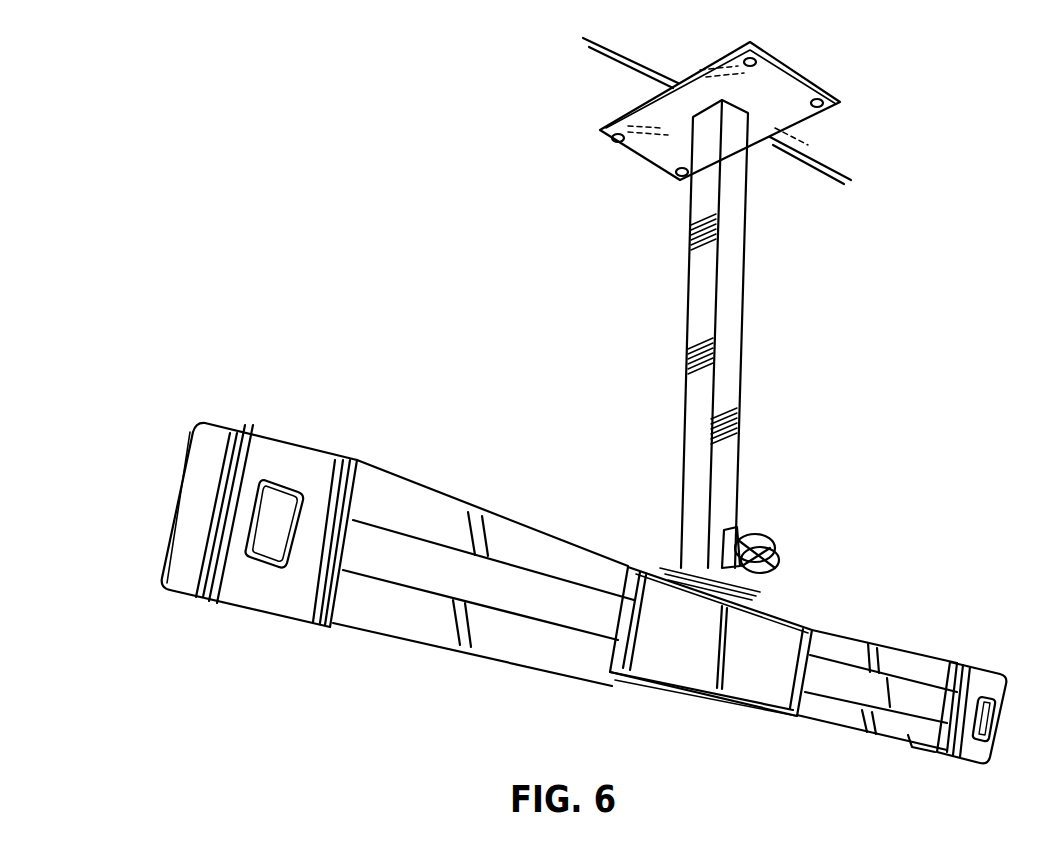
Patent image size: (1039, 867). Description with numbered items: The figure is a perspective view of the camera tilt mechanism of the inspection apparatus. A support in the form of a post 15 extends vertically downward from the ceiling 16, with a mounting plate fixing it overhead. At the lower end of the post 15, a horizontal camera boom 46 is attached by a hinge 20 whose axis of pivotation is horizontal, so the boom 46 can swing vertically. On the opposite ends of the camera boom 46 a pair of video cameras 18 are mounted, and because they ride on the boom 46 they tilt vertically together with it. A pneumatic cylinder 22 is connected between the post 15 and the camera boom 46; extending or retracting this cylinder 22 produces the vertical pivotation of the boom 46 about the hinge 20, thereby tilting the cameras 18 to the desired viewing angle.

The post 15 is at (702, 285).
The ceiling 16 is at (698, 111).
The video camera 18 is at (268, 617).
The hinge 20 is at (658, 560).
The pneumatic cylinder 22 is at (734, 551).
The camera boom 46 is at (542, 530).